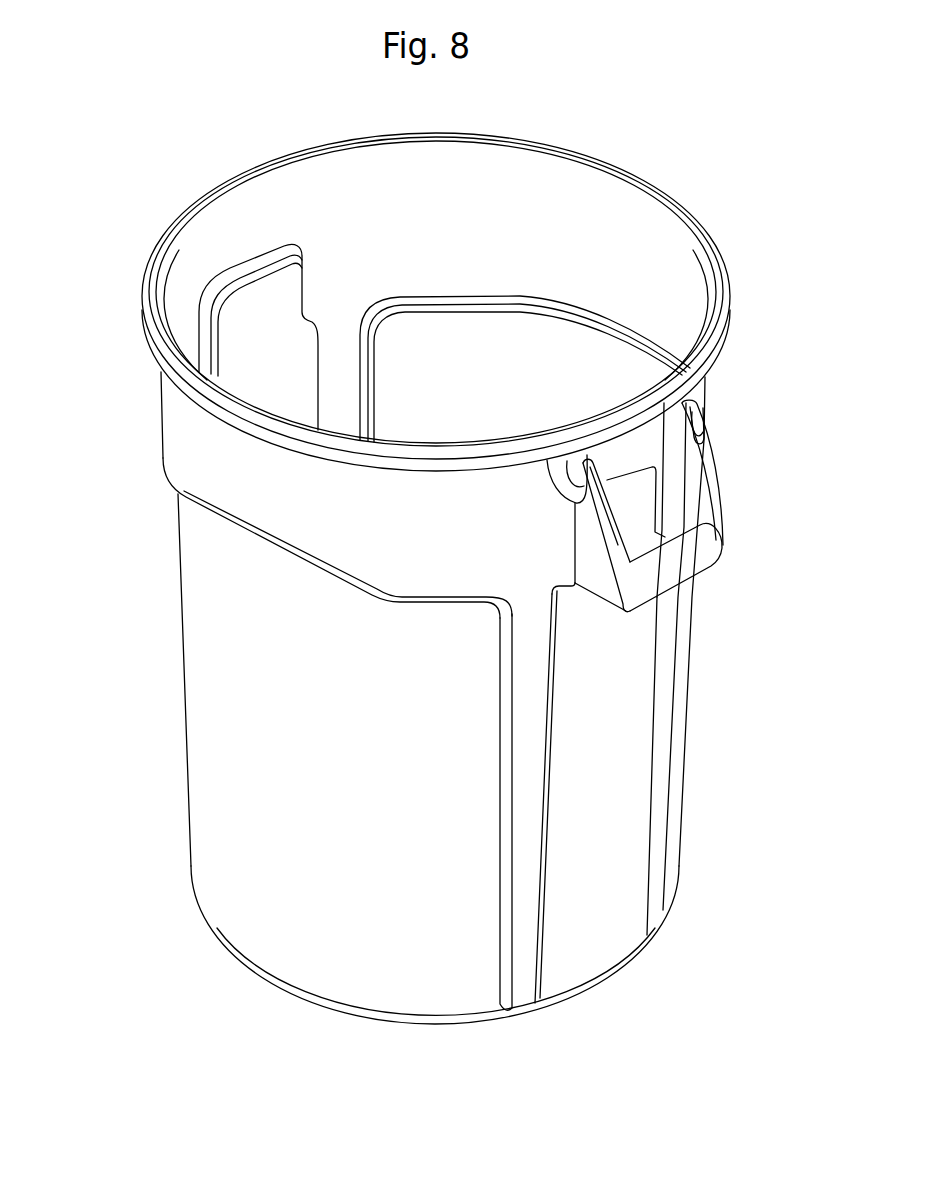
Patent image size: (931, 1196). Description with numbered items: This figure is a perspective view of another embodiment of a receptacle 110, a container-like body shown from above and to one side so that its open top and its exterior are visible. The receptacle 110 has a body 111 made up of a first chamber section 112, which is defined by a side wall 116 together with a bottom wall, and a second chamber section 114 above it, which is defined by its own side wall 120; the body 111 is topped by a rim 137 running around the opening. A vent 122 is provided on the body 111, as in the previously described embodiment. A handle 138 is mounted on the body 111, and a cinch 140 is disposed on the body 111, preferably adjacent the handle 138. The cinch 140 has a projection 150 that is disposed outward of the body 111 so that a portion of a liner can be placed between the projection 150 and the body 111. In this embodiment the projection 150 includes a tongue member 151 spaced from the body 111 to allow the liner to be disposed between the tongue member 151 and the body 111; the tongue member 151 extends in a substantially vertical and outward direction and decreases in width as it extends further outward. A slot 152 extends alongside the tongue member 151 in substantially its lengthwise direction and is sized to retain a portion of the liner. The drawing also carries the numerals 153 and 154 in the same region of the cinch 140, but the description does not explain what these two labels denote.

The receptacle 110 is at (762, 218).
The body 111 is at (684, 718).
The first chamber section 112 is at (136, 769).
The second chamber section 114 is at (128, 430).
The side wall 116 is at (249, 947).
The side wall 120 is at (278, 540).
The vent 122 is at (506, 916).
The rim 137 is at (648, 183).
The handle 138 is at (695, 563).
The cinch 140 is at (534, 494).
The projection 150 is at (577, 504).
The tongue member 151 is at (566, 484).
The slot 152 is at (640, 450).
The handle arm 153 is at (574, 572).
The pivot 154 is at (592, 460).